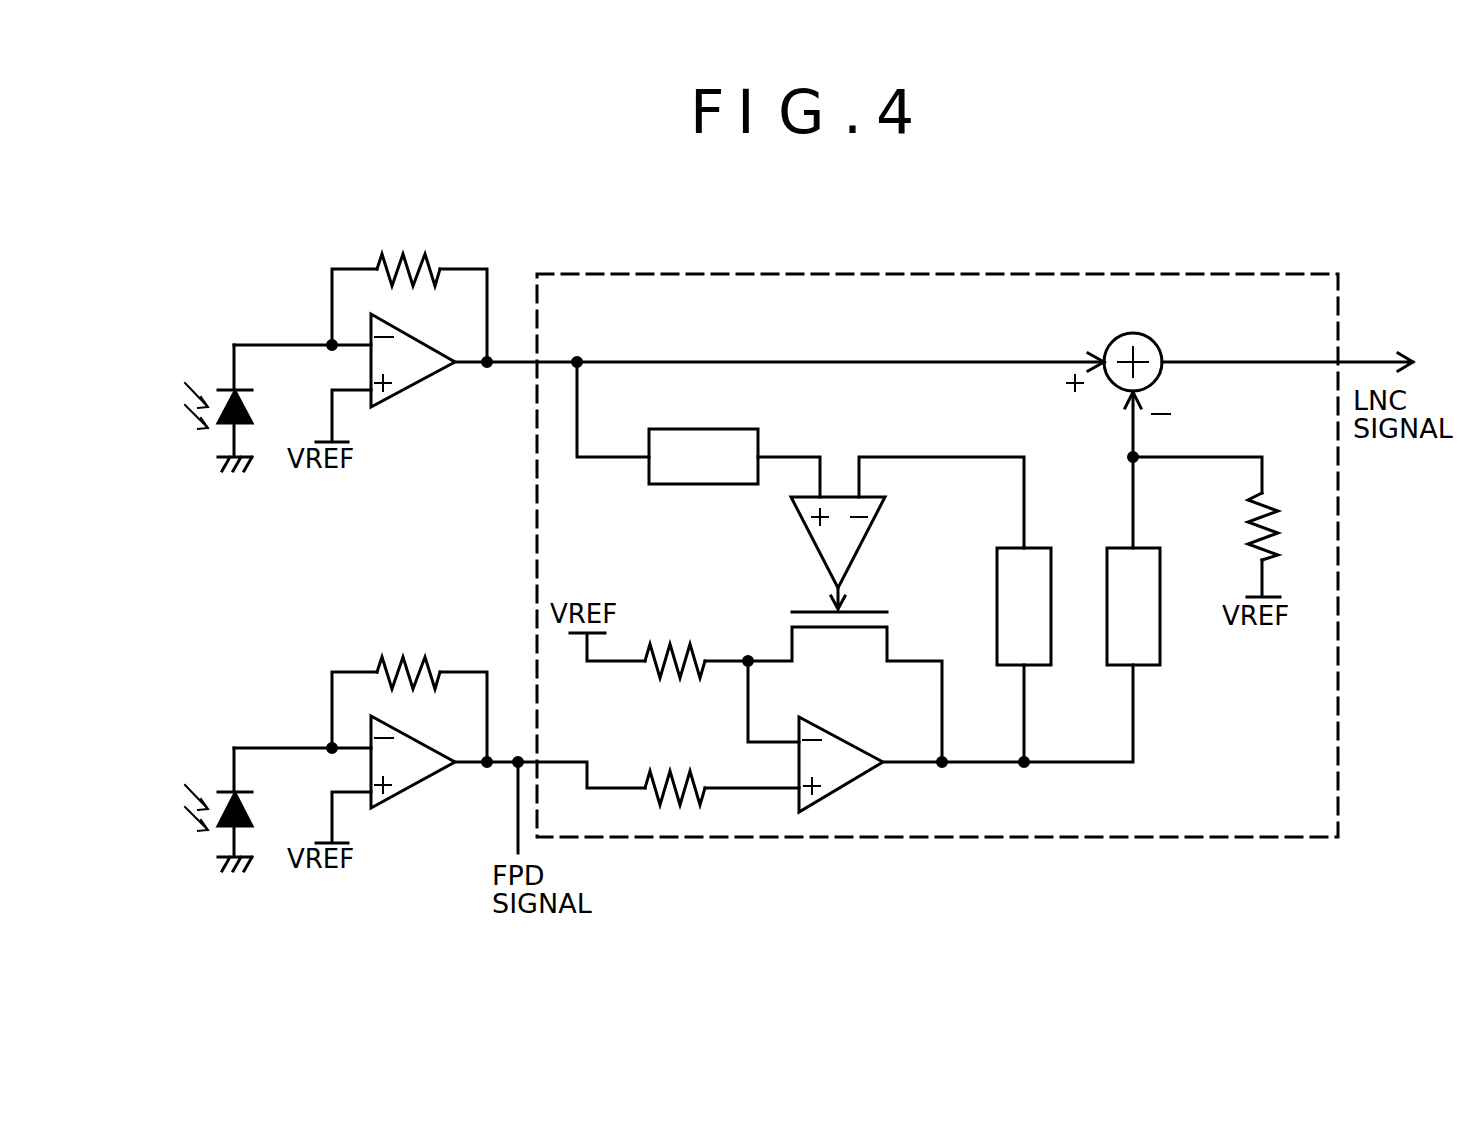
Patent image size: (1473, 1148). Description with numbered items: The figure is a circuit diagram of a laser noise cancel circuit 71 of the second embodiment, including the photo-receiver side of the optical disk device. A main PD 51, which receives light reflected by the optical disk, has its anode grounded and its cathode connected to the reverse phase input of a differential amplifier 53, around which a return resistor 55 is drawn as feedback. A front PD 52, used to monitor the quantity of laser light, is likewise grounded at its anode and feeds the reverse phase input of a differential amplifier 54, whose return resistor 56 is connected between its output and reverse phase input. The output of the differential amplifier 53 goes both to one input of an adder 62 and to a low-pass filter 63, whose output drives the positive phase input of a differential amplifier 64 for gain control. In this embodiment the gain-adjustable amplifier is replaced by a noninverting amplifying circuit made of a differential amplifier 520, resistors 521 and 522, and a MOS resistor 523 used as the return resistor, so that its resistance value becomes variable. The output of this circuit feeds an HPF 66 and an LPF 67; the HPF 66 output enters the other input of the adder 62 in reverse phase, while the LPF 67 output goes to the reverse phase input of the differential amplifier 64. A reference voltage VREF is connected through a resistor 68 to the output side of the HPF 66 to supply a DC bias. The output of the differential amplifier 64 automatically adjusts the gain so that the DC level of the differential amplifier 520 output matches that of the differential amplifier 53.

The main PD 51 is at (198, 433).
The front PD 52 is at (198, 836).
The differential amplifier 53 is at (420, 380).
The differential amplifier 54 is at (420, 782).
The feedback resistor 55 is at (414, 260).
The return resistor 56 is at (414, 662).
The adder 62 is at (1155, 340).
The low-pass filter 63 is at (700, 484).
The differential amplifier for gain control 64 is at (873, 523).
The HPF 66 is at (1160, 665).
The low-pass filter 67 is at (1038, 665).
The resistor 68 is at (1280, 512).
The laser noise cancel circuit 71 is at (1187, 274).
The differential amplifier 520 is at (855, 782).
The resistor 521 is at (679, 778).
The resistor 522 is at (679, 652).
The MOS resistor 523 is at (860, 600).